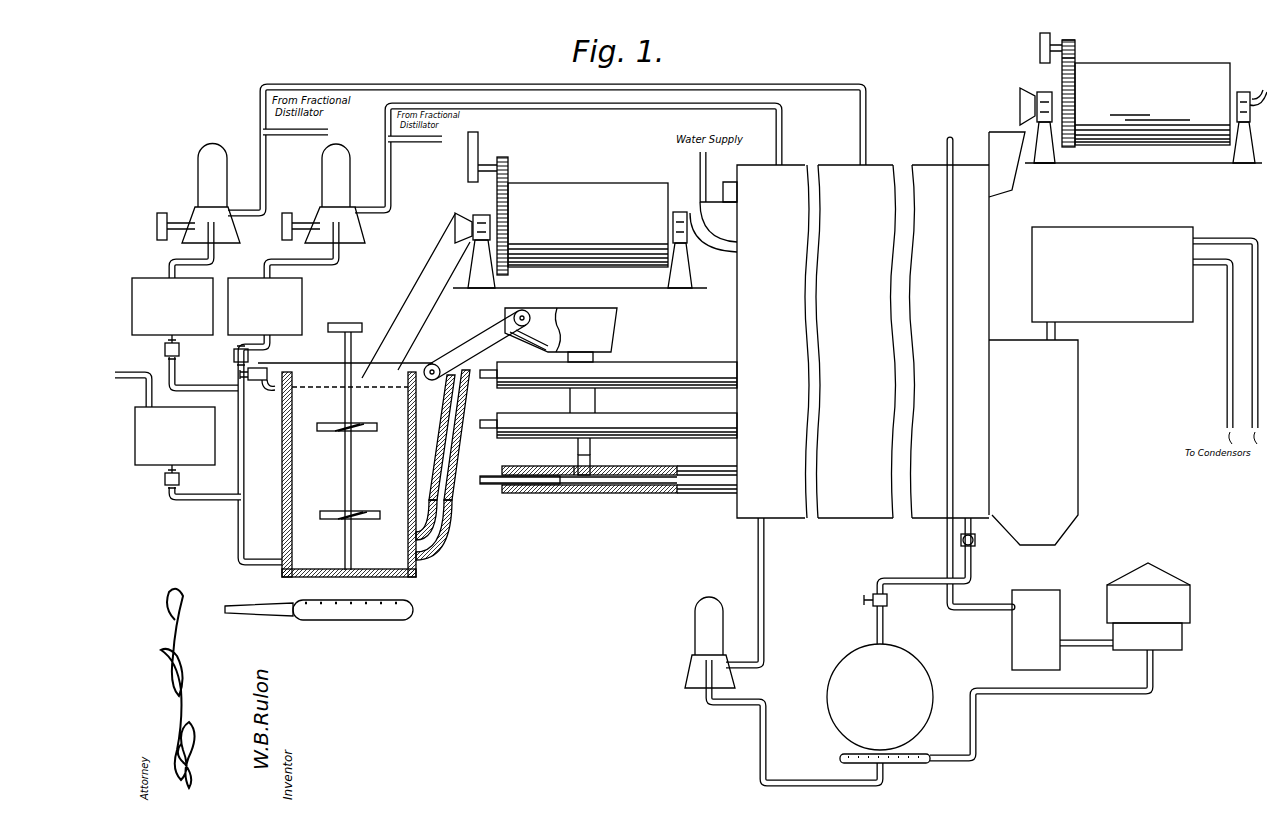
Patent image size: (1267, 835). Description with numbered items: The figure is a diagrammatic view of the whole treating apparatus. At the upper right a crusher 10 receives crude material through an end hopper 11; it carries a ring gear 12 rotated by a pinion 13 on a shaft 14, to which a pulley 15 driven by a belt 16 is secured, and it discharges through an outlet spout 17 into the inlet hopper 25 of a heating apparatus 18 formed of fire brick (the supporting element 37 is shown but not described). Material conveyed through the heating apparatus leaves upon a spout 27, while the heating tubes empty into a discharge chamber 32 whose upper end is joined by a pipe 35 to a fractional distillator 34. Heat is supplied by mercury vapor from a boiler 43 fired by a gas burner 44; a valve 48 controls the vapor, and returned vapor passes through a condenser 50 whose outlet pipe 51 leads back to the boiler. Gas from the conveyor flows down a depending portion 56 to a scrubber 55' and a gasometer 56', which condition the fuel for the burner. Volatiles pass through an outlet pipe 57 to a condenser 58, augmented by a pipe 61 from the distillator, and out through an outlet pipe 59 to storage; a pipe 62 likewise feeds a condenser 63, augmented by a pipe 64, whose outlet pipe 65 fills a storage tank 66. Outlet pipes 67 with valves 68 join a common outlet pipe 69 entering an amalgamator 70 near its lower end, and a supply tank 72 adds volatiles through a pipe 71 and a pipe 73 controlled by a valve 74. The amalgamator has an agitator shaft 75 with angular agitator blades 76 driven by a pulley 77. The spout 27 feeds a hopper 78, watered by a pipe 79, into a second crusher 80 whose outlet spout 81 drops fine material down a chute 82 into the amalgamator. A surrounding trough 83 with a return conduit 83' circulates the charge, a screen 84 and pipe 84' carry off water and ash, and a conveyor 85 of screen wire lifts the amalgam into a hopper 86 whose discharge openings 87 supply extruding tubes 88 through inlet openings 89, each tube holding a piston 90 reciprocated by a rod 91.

The crusher 10 is at (1162, 71).
The end hopper 11 is at (1258, 80).
The ring gear 12 is at (1076, 100).
The pinion 13 is at (1076, 56).
The shaft 14 is at (1070, 42).
The pulley 15 is at (1052, 52).
The belt 16 is at (1040, 44).
The outlet spout 17 is at (1018, 104).
The heating apparatus 18 is at (876, 164).
The inlet hopper 25 is at (1008, 178).
The spout 27 is at (730, 180).
The discharge chamber 32 is at (1033, 442).
The fractional distillator 34 is at (1120, 226).
The pipe 35 is at (1046, 333).
The drum support 37 is at (1018, 108).
The boiler 43 is at (880, 697).
The gas burner 44 is at (846, 752).
The valve 48 is at (872, 606).
The condenser 50 is at (694, 628).
The outlet pipe 51 is at (704, 702).
The scrubber 55' is at (1036, 630).
The depending portion 56 is at (967, 373).
The gasometer 56' is at (1148, 606).
The outlet pipe 57 is at (866, 108).
The condenser 58 is at (216, 146).
The outlet pipe 59 is at (167, 258).
The pipe 61 is at (308, 136).
The pipe 62 is at (748, 106).
The condenser 63 is at (326, 184).
The pipe 64 is at (426, 142).
The outlet pipe 65 is at (342, 258).
The storage tank 66 is at (217, 306).
The outlet pipes 67 is at (164, 346).
The valves 68 is at (233, 356).
The common outlet pipe 69 is at (244, 470).
The amalgamator 70 is at (283, 508).
The pipe 71 is at (136, 382).
The supply tank 72 is at (175, 436).
The pipe 73 is at (212, 503).
The valve 74 is at (164, 483).
The agitator shaft 75 is at (352, 498).
The agitator blades 76 is at (334, 432).
The pulley 77 is at (352, 323).
The hopper 78 is at (720, 228).
The pipe 79 is at (700, 176).
The crusher 80 is at (580, 210).
The outlet spout 81 is at (454, 224).
The chute 82 is at (400, 310).
The trough 83 is at (419, 435).
The return conduit 83' is at (448, 526).
The screen 84 is at (261, 392).
The pipe 84' is at (247, 385).
The conveyor 85 is at (464, 342).
The hopper 86 is at (613, 322).
The discharge openings 87 is at (592, 462).
The extruding tubes 88 is at (676, 466).
The inlet opening 89 is at (568, 468).
The piston 90 is at (552, 486).
The rod 91 is at (500, 478).